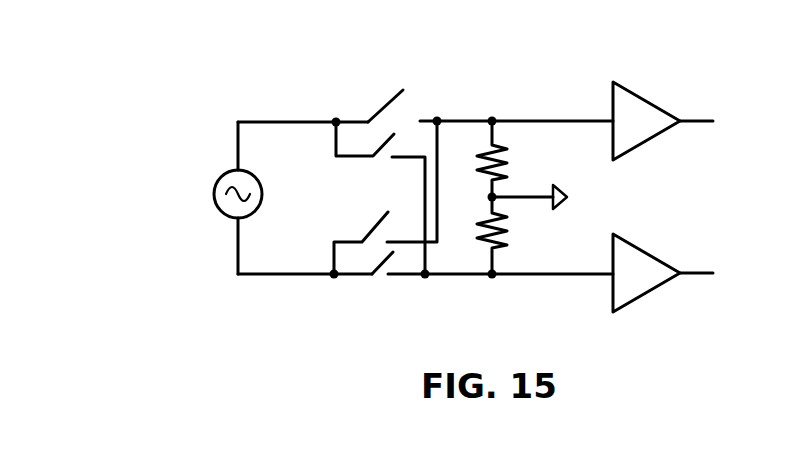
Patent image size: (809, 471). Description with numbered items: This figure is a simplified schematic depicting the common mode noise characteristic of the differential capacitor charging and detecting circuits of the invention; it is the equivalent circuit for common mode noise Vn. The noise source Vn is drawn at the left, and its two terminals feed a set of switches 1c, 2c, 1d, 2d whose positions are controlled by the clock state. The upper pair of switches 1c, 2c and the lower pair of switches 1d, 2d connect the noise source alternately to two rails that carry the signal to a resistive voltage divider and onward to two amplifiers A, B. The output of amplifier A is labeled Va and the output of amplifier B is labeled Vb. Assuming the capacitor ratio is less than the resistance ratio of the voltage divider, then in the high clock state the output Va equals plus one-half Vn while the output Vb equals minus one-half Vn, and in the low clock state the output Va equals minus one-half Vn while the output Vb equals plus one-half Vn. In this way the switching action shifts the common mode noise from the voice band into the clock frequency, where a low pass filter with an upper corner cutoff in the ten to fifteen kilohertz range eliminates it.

The switch 1c is at (393, 100).
The switch 1d is at (380, 268).
The switch 2c is at (383, 140).
The switch 2d is at (373, 223).
The common mode noise Vn is at (211, 198).
The amplifier A is at (640, 131).
The amplifier B is at (640, 282).
The output voltage Va is at (733, 121).
The output voltage Vb is at (734, 273).